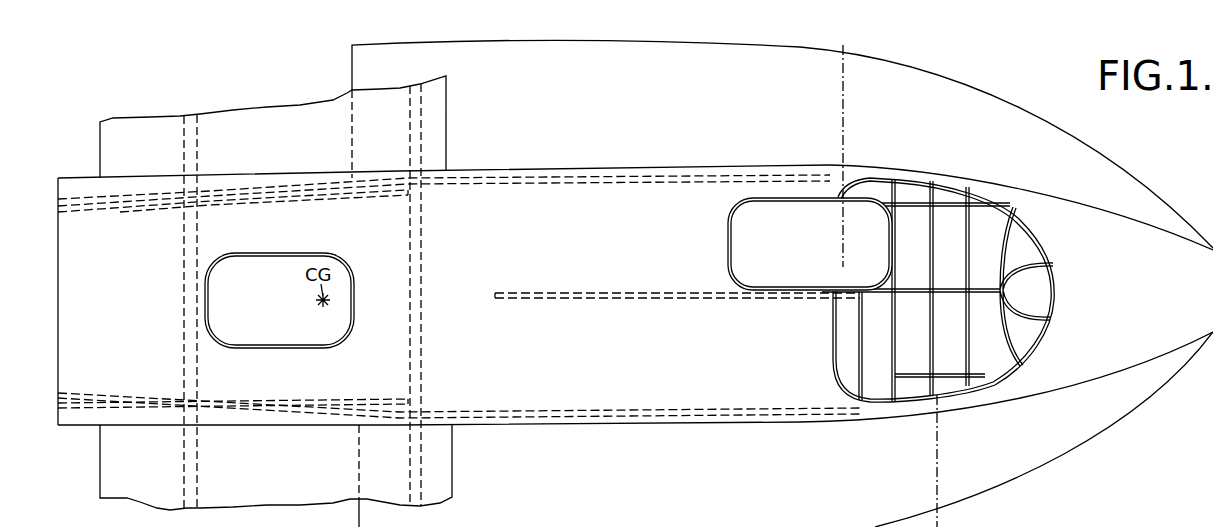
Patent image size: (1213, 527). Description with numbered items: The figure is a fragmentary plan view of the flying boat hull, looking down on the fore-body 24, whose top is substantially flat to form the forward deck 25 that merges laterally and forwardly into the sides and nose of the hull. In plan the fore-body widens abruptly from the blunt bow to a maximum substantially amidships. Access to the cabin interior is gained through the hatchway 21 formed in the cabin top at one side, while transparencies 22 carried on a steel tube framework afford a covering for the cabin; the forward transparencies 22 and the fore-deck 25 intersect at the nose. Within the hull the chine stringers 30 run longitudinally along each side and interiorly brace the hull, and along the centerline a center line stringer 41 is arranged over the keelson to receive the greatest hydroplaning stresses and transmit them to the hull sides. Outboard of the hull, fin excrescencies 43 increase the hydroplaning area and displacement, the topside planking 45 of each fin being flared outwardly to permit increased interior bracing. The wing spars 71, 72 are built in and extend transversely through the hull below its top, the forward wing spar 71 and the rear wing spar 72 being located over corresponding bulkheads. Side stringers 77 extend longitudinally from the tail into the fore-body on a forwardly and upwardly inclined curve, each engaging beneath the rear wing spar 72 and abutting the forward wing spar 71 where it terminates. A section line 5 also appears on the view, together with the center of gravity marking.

The section line 5 is at (843, 45).
The hatchway 21 is at (773, 205).
The transparencies 22 is at (992, 247).
The fore-body 24 is at (892, 428).
The deck 25 is at (1181, 293).
The chine stringers 30 is at (552, 181).
The center line stringer 41 is at (668, 300).
The fin excrescencies 43 is at (955, 429).
The topside planking 45 is at (806, 144).
The forward wing spar 71 is at (425, 465).
The rear wing spar 72 is at (200, 472).
The side stringers 77 is at (357, 197).